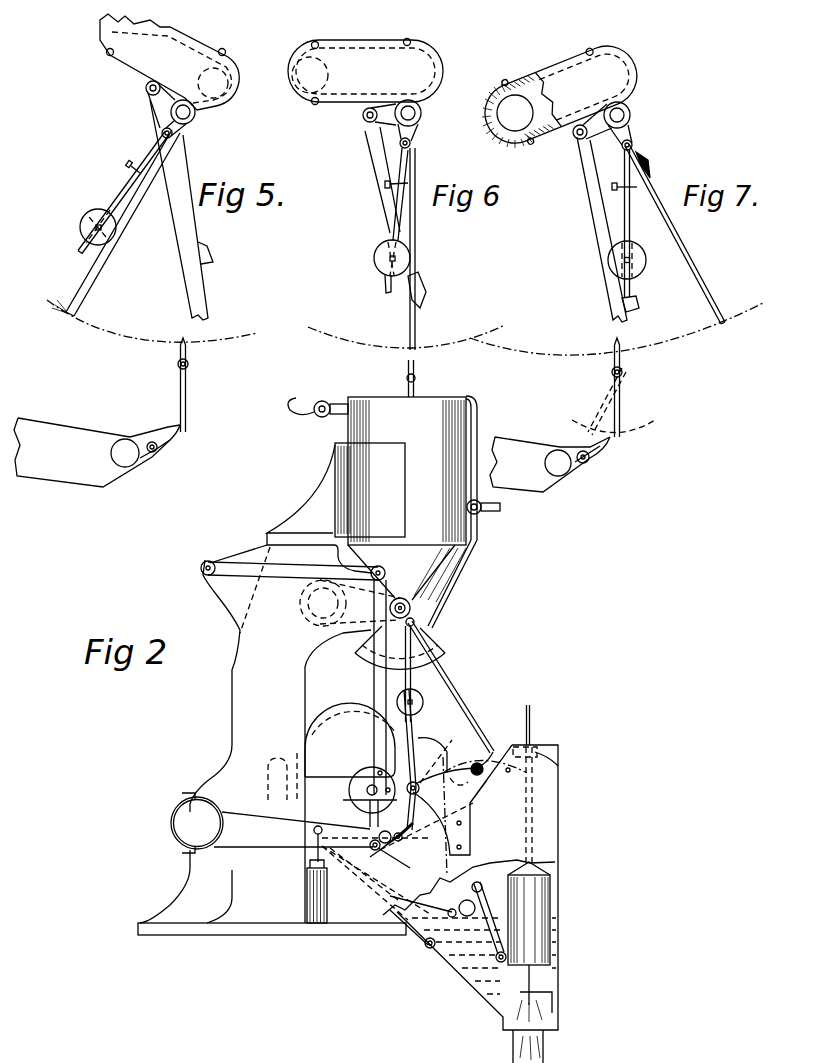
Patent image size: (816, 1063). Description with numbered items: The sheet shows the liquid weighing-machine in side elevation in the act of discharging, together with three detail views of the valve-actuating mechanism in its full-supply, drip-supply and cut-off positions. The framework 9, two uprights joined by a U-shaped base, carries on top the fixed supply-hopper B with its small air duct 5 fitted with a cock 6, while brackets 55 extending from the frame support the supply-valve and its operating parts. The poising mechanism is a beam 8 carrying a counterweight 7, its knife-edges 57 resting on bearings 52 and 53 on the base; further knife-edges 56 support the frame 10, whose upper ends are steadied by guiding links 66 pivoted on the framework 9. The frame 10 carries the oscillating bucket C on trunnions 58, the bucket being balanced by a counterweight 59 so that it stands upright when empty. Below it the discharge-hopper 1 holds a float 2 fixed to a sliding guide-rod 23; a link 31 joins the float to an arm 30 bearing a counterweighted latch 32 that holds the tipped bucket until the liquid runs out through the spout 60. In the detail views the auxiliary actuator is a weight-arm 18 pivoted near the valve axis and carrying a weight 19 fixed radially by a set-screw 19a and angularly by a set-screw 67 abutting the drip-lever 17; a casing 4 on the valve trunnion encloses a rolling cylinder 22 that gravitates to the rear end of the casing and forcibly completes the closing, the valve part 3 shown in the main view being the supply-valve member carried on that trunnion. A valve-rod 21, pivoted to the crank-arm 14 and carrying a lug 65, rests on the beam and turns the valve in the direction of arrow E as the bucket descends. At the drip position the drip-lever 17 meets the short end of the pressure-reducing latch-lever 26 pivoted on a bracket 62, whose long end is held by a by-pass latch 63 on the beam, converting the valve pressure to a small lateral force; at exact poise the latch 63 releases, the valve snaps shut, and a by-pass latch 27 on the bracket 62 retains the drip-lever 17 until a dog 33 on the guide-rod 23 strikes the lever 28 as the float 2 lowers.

In FIG. 2, the discharge-hopper 1 is at (556, 803).
In FIG. 2, the float 2 is at (552, 890).
In FIG. 2, the sector gear 3 is at (448, 642).
In FIG. 5, the casing 4 is at (140, 52).
In FIG. 6, the casing 4 is at (425, 62).
In FIG. 7, the casing 4 is at (561, 94).
In FIG. 2, the air pipe or duct 5 is at (470, 568).
In FIG. 2, the cock or valve 6 is at (482, 503).
In FIG. 2, the counterweight 7 is at (172, 834).
In FIG. 2, the beam 8 is at (522, 440).
In FIG. 2, the framework 9 is at (245, 723).
In FIG. 2, the frame 10 is at (376, 734).
In FIG. 5, the crank-arm 14 is at (152, 98).
In FIG. 6, the crank-arm 14 is at (374, 120).
In FIG. 7, the crank-arm 14 is at (599, 136).
In FIG. 5, the drip-lever 17 is at (137, 204).
In FIG. 6, the drip-lever 17 is at (417, 233).
In FIG. 7, the drip-lever 17 is at (690, 245).
In FIG. 2, the drip-lever 17 is at (450, 678).
In FIG. 5, the weight-arm 18 is at (131, 179).
In FIG. 6, the weight-arm 18 is at (395, 214).
In FIG. 7, the weight-arm 18 is at (631, 226).
In FIG. 2, the weight-arm 18 is at (413, 690).
In FIG. 5, the weight 19 is at (88, 222).
In FIG. 6, the weight 19 is at (376, 260).
In FIG. 7, the weight 19 is at (647, 263).
In FIG. 2, the weight 19 is at (424, 705).
In FIG. 5, the set-screw 19a is at (96, 230).
In FIG. 6, the set-screw 19a is at (398, 258).
In FIG. 7, the set-screw 19a is at (624, 260).
In FIG. 2, the set-screw 19a is at (410, 702).
In FIG. 5, the valve-rod 21 is at (198, 292).
In FIG. 6, the valve-rod 21 is at (378, 160).
In FIG. 7, the valve-rod 21 is at (606, 274).
In FIG. 5, the rolling cylinder 22 is at (217, 96).
In FIG. 6, the rolling cylinder 22 is at (308, 88).
In FIG. 7, the rolling cylinder 22 is at (510, 124).
In FIG. 2, the sliding guide-rod 23 is at (532, 718).
In FIG. 2, the pressure-reducing latch-lever 26 is at (414, 375).
In FIG. 2, the counterweighted by-pass latch 27 is at (475, 765).
In FIG. 2, the lever 28 is at (484, 780).
In FIG. 2, the arm 30 is at (449, 933).
In FIG. 2, the link 31 is at (480, 900).
In FIG. 2, the counterweighted latch 32 is at (459, 906).
In FIG. 2, the dog 33 is at (558, 766).
In FIG. 2, the bearing 52 is at (376, 845).
In FIG. 2, the bearing 53 is at (306, 870).
In FIG. 2, the bracket 55 is at (401, 598).
In FIG. 2, the knife-edge 56 is at (374, 851).
In FIG. 2, the knife-edge 57 is at (322, 828).
In FIG. 2, the trunnion 58 is at (386, 780).
In FIG. 2, the counterweight 59 is at (347, 708).
In FIG. 2, the spout 60 is at (544, 1050).
In FIG. 2, the bracket 62 is at (467, 803).
In FIG. 2, the counterweighted by-pass latch 63 is at (160, 447).
In FIG. 5, the lug 65 is at (207, 254).
In FIG. 6, the lug 65 is at (425, 283).
In FIG. 7, the lug 65 is at (640, 303).
In FIG. 2, the steadying or guiding link 66 is at (284, 570).
In FIG. 5, the set-screw 67 is at (127, 163).
In FIG. 6, the set-screw 67 is at (385, 188).
In FIG. 7, the set-screw 67 is at (615, 193).
In FIG. 2, the supply-hopper B is at (372, 488).
In FIG. 2, the bucket C is at (435, 746).
In FIG. 5, the arrow E is at (100, 40).